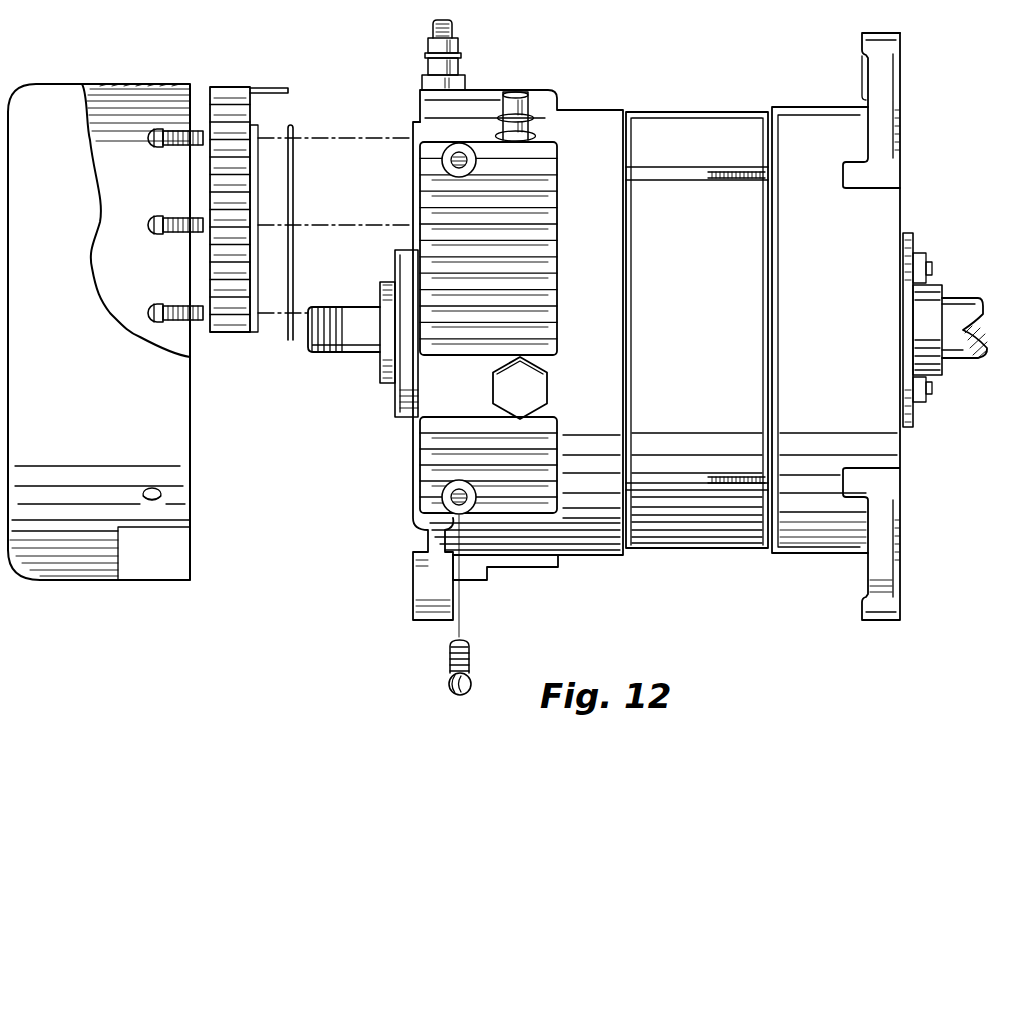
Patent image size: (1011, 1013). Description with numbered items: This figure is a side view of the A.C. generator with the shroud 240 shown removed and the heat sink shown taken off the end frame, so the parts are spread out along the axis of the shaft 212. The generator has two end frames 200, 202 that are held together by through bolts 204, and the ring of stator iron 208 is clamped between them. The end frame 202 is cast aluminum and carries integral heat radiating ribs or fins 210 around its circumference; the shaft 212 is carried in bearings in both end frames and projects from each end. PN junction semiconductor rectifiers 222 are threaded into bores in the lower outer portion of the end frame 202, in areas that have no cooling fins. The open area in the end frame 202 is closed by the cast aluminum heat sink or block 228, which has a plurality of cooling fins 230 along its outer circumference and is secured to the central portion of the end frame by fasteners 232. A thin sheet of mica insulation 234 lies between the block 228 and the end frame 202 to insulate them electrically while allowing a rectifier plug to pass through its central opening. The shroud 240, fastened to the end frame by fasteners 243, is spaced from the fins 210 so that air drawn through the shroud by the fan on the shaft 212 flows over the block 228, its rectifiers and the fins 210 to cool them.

The end frame 200 is at (877, 217).
The end frame 202 is at (578, 125).
The through bolts 204 is at (678, 177).
The ring of stator iron 208 is at (697, 308).
The heat radiating ribs or fins 210 is at (540, 230).
The shaft 212 is at (343, 328).
The rectifiers 222 is at (525, 392).
The heat sink or block 228 is at (272, 189).
The cooling fins 230 is at (236, 148).
The fasteners 232 is at (178, 136).
The mica insulation 234 is at (290, 200).
The shroud 240 is at (170, 407).
The fasteners 243 is at (467, 655).